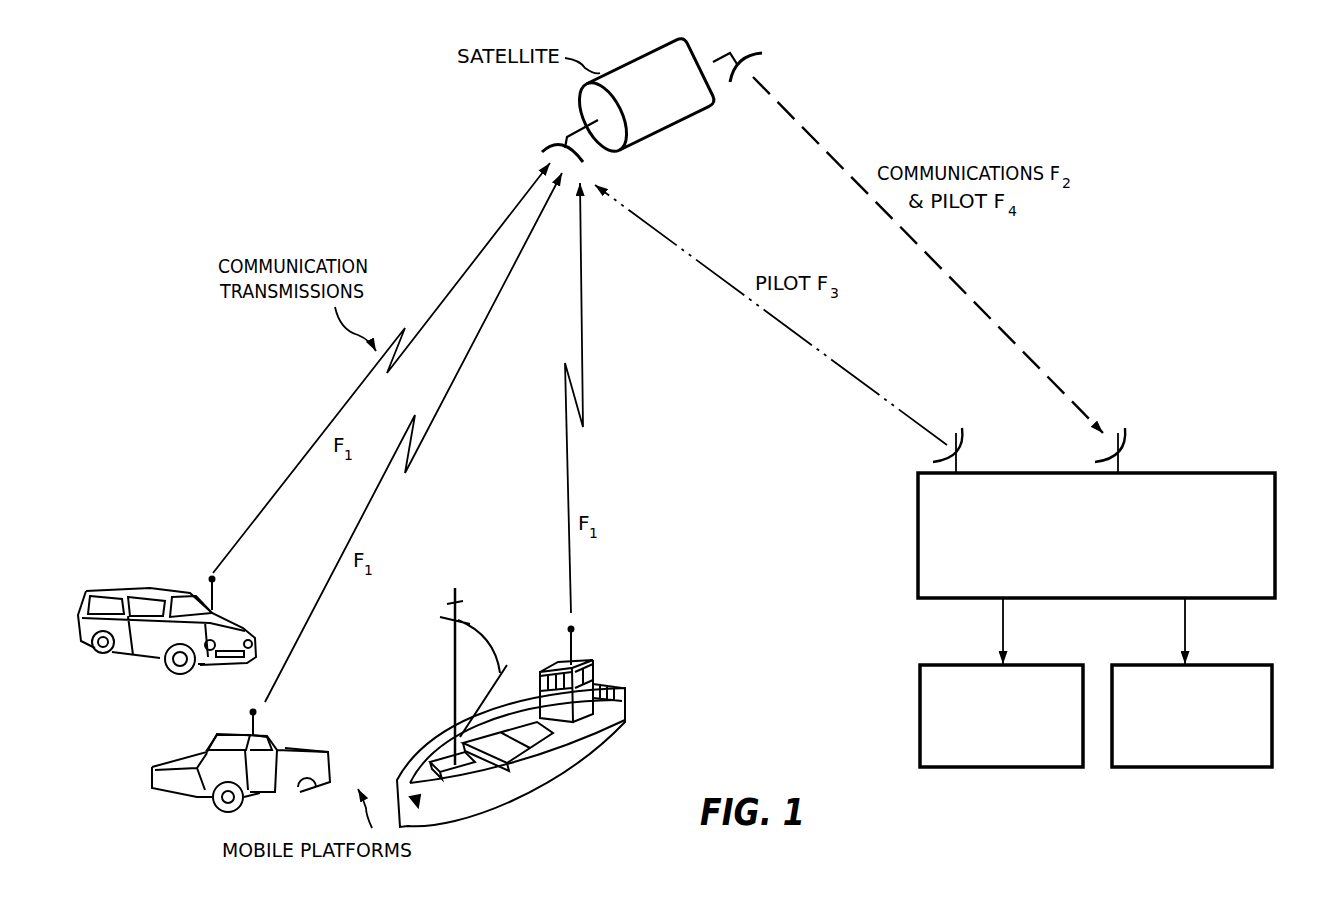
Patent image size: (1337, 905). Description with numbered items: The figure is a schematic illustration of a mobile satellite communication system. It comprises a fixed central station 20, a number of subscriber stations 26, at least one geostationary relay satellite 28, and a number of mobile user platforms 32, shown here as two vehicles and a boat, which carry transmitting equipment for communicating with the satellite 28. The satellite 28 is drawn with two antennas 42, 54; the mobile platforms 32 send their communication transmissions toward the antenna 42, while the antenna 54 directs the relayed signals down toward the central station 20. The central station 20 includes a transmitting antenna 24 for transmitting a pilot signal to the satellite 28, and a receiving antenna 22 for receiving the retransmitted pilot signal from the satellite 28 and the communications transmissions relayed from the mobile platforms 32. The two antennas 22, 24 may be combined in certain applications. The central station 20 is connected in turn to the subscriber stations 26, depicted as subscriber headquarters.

The fixed central station 20 is at (918, 530).
The receiving antenna 22 is at (1126, 433).
The transmitting antenna 24 is at (963, 432).
The subscriber stations 26 is at (920, 705).
The geostationary relay satellite 28 is at (677, 113).
The mobile user platforms 32 is at (138, 590).
The satellite antenna 42 is at (550, 147).
The satellite antenna 54 is at (762, 55).